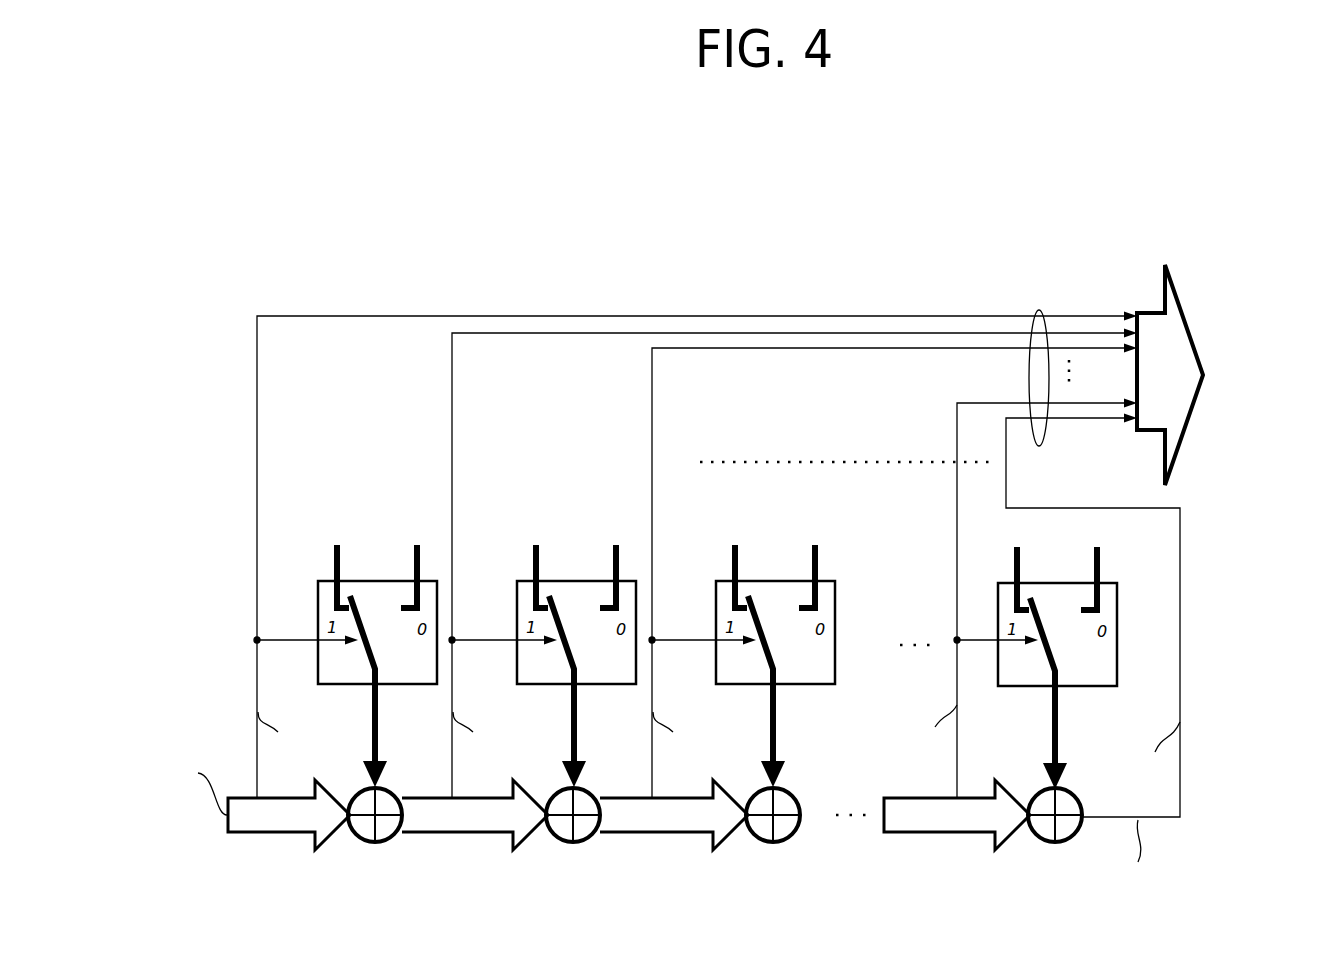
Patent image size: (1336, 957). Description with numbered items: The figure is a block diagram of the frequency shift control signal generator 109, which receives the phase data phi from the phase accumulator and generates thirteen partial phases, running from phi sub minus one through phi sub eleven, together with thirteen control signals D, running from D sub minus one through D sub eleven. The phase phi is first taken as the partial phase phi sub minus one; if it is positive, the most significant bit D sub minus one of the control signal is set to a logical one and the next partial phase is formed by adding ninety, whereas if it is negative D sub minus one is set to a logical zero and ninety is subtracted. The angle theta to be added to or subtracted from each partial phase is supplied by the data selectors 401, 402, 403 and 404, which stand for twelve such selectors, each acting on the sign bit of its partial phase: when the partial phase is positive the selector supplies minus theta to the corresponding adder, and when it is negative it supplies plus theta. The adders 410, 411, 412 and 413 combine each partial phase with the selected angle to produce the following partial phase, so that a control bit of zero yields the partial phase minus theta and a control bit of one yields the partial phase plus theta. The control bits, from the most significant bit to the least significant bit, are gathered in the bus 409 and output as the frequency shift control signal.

The frequency shift control signal generator 109 is at (930, 197).
The data selector 401 is at (362, 578).
The data selector 402 is at (562, 578).
The data selector 403 is at (762, 578).
The data selector 404 is at (1118, 632).
The bus 409 is at (1042, 315).
The adder 410 is at (372, 842).
The adder 411 is at (570, 842).
The adder 412 is at (770, 842).
The adder 413 is at (1052, 842).